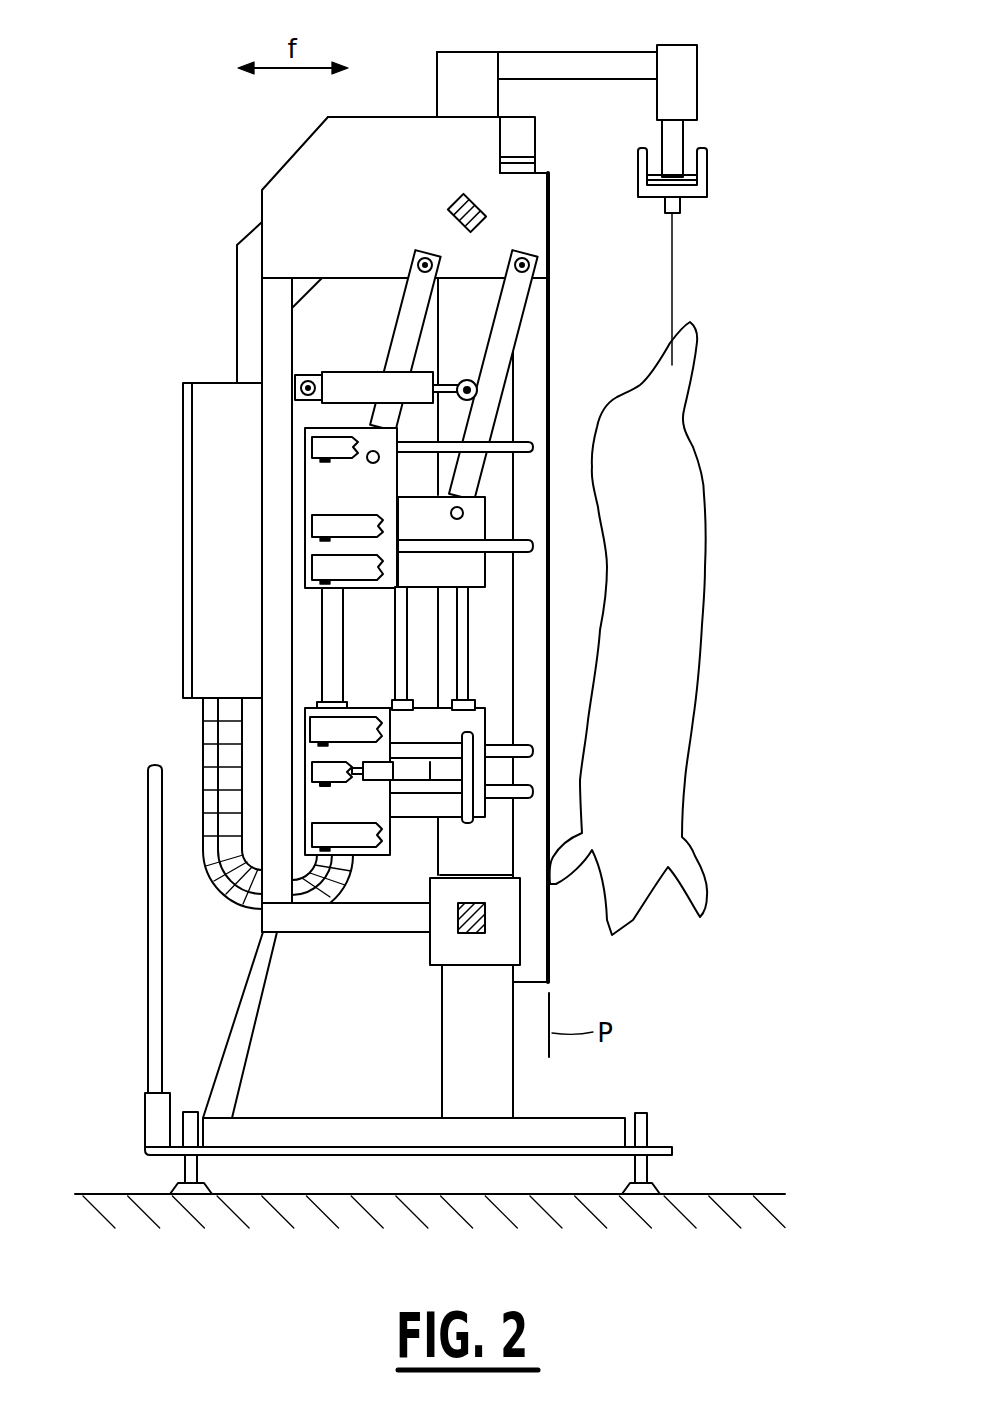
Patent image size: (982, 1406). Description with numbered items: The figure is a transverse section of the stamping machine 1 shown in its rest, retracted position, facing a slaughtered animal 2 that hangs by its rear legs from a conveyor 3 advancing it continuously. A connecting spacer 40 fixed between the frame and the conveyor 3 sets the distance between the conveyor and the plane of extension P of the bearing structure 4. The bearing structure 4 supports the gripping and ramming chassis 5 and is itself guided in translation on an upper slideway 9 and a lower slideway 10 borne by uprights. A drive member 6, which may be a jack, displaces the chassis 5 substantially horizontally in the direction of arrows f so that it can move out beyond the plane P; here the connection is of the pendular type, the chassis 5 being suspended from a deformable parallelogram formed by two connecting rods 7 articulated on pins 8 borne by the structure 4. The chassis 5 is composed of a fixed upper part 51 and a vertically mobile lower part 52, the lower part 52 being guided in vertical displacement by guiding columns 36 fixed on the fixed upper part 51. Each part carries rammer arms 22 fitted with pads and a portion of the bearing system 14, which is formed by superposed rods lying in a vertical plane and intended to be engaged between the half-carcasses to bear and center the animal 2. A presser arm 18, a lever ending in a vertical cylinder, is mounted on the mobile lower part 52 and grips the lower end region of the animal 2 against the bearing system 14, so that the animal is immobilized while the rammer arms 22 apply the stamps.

The machine 1 is at (218, 230).
The slaughtered animal 2 is at (690, 667).
The conveyor 3 is at (692, 167).
The bearing structure 4 is at (273, 310).
The gripping and ramming chassis 5 is at (304, 523).
The drive member 6 is at (355, 387).
The connecting rods 7 is at (505, 320).
The pins 8 is at (511, 266).
The upper slideway 9 is at (456, 207).
The lower slideway 10 is at (468, 922).
The bearing system 14 is at (527, 443).
The presser arm 18 is at (335, 768).
The rammer arm 22 is at (320, 444).
The guiding columns 36 is at (330, 632).
The connecting spacer 40 is at (582, 62).
The fixed upper part of the chassis 51 is at (392, 580).
The mobile lower part of the chassis 52 is at (385, 717).